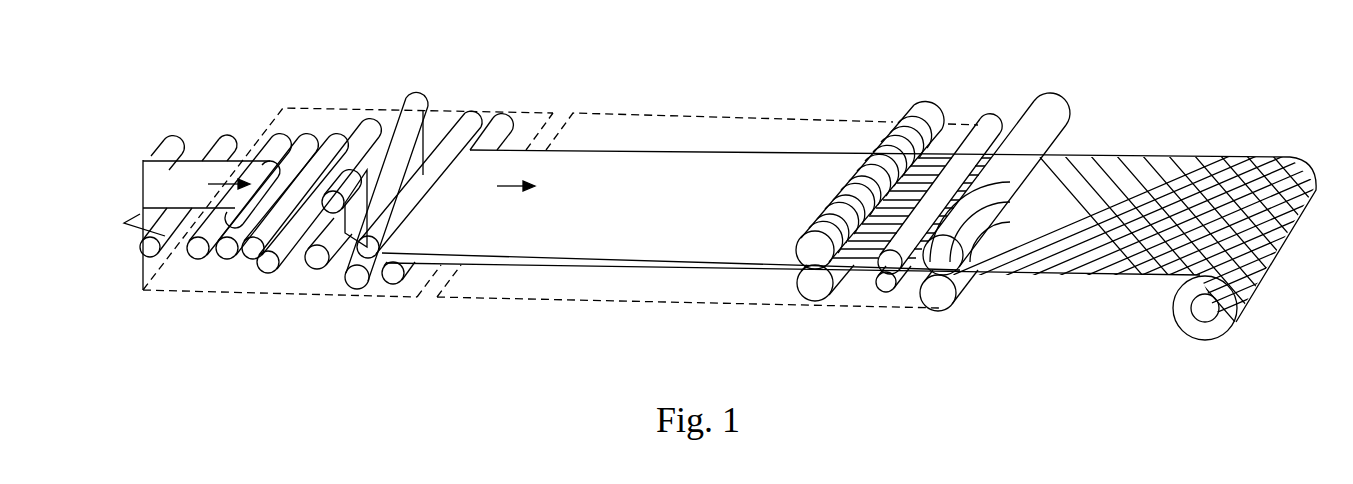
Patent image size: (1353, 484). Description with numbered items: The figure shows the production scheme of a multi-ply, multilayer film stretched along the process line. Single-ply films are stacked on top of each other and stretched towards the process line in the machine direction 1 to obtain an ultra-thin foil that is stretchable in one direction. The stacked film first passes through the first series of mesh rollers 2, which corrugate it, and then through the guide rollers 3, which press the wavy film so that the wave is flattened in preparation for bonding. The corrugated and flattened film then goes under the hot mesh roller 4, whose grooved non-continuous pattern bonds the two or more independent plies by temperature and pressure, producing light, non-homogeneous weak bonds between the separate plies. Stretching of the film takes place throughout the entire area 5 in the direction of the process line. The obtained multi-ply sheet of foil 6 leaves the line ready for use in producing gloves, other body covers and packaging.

The process line (MD-Machine Direction) stretching 1 is at (216, 310).
The mesh rollers 2 is at (938, 94).
The guide rollers 3 is at (1000, 102).
The hot mesh roller 4 is at (1068, 84).
The stretching area 5 is at (661, 83).
The multi-ply sheet of foil 6 is at (1138, 142).